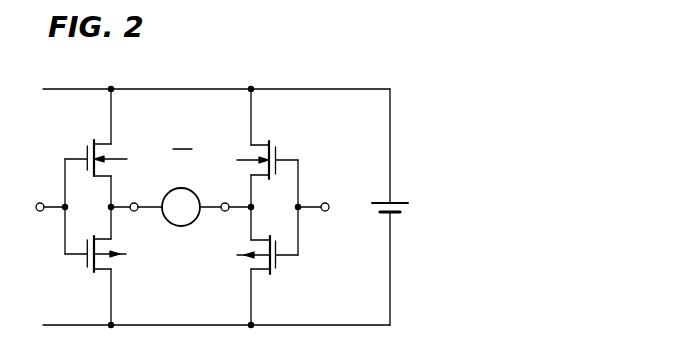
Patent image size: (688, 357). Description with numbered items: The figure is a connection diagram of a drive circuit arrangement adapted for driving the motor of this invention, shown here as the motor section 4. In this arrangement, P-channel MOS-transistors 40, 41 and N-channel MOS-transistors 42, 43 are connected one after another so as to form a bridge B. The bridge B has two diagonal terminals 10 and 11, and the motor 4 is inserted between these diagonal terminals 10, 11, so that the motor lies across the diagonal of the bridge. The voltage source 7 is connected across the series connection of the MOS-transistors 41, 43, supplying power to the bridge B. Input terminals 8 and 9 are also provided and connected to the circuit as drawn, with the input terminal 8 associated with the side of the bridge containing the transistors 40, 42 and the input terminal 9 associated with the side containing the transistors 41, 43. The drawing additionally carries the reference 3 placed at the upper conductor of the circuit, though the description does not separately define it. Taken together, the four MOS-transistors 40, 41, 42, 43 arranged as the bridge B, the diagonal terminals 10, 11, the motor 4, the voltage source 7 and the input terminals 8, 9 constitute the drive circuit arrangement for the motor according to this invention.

The bridge circuit 3 is at (337, 89).
The motor 4 is at (182, 226).
The voltage source 7 is at (398, 210).
The input terminal 8 is at (40, 203).
The input terminal 9 is at (325, 203).
The diagonal terminal 10 is at (134, 203).
The diagonal terminal 11 is at (225, 203).
The P-channel MOS-transistor 40 is at (85, 149).
The P-channel MOS-transistor 41 is at (276, 153).
The N-channel MOS-transistor 42 is at (85, 266).
The N-channel MOS-transistor 43 is at (276, 264).
The bridge B is at (182, 139).